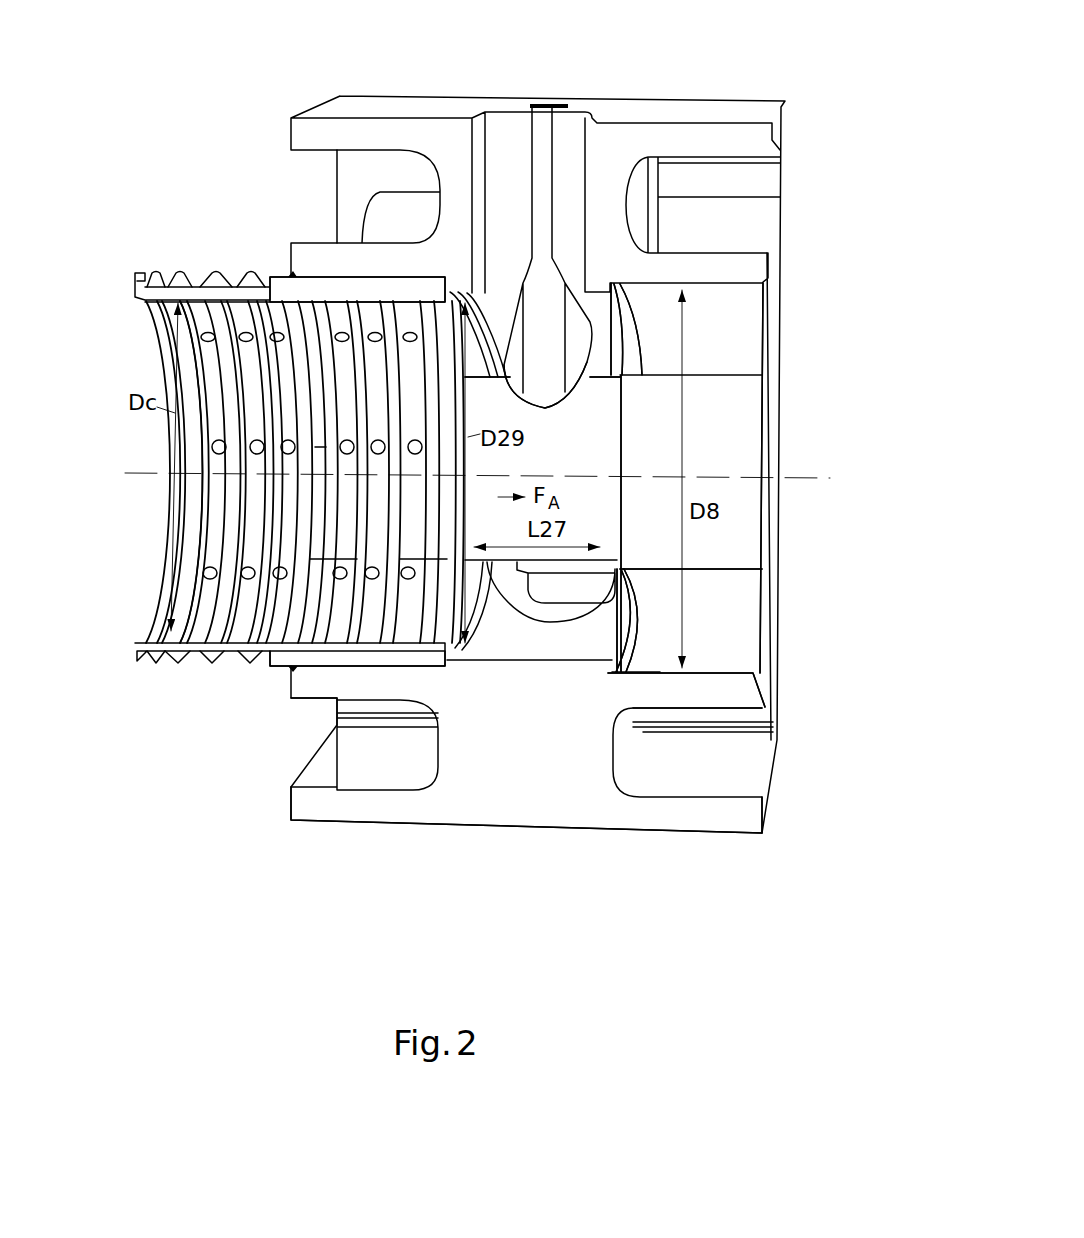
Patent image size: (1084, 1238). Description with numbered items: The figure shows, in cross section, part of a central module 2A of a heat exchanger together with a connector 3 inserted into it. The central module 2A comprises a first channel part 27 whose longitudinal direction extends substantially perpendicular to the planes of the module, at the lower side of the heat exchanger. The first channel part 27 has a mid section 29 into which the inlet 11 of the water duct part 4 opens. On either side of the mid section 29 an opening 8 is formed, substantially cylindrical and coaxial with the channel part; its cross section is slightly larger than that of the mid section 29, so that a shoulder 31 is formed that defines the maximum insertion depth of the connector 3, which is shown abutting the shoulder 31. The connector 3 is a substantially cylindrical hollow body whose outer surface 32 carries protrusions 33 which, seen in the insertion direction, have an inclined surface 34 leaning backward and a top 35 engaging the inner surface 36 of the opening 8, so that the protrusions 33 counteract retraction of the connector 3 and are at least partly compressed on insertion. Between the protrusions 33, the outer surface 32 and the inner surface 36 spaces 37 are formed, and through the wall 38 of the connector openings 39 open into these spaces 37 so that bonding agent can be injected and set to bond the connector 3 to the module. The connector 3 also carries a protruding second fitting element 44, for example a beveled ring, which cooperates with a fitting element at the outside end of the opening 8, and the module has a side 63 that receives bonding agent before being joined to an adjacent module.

The central module 2A is at (790, 175).
The connector 3 is at (158, 258).
The duct part 4 is at (568, 157).
The opening 8 is at (725, 637).
The inlet 11 is at (545, 343).
The first channel part 27 is at (732, 437).
The mid section 29 is at (565, 632).
The shoulder 31 is at (623, 547).
The outer surface 32 is at (218, 268).
The protrusion 33 is at (203, 670).
The inclined surface 34 is at (238, 665).
The top 35 is at (250, 663).
The inner surface 36 is at (360, 668).
The space 37 is at (192, 655).
The wall 38 is at (185, 590).
The opening 39 is at (204, 566).
The second fitting element 44 is at (279, 268).
The side 63 is at (289, 800).